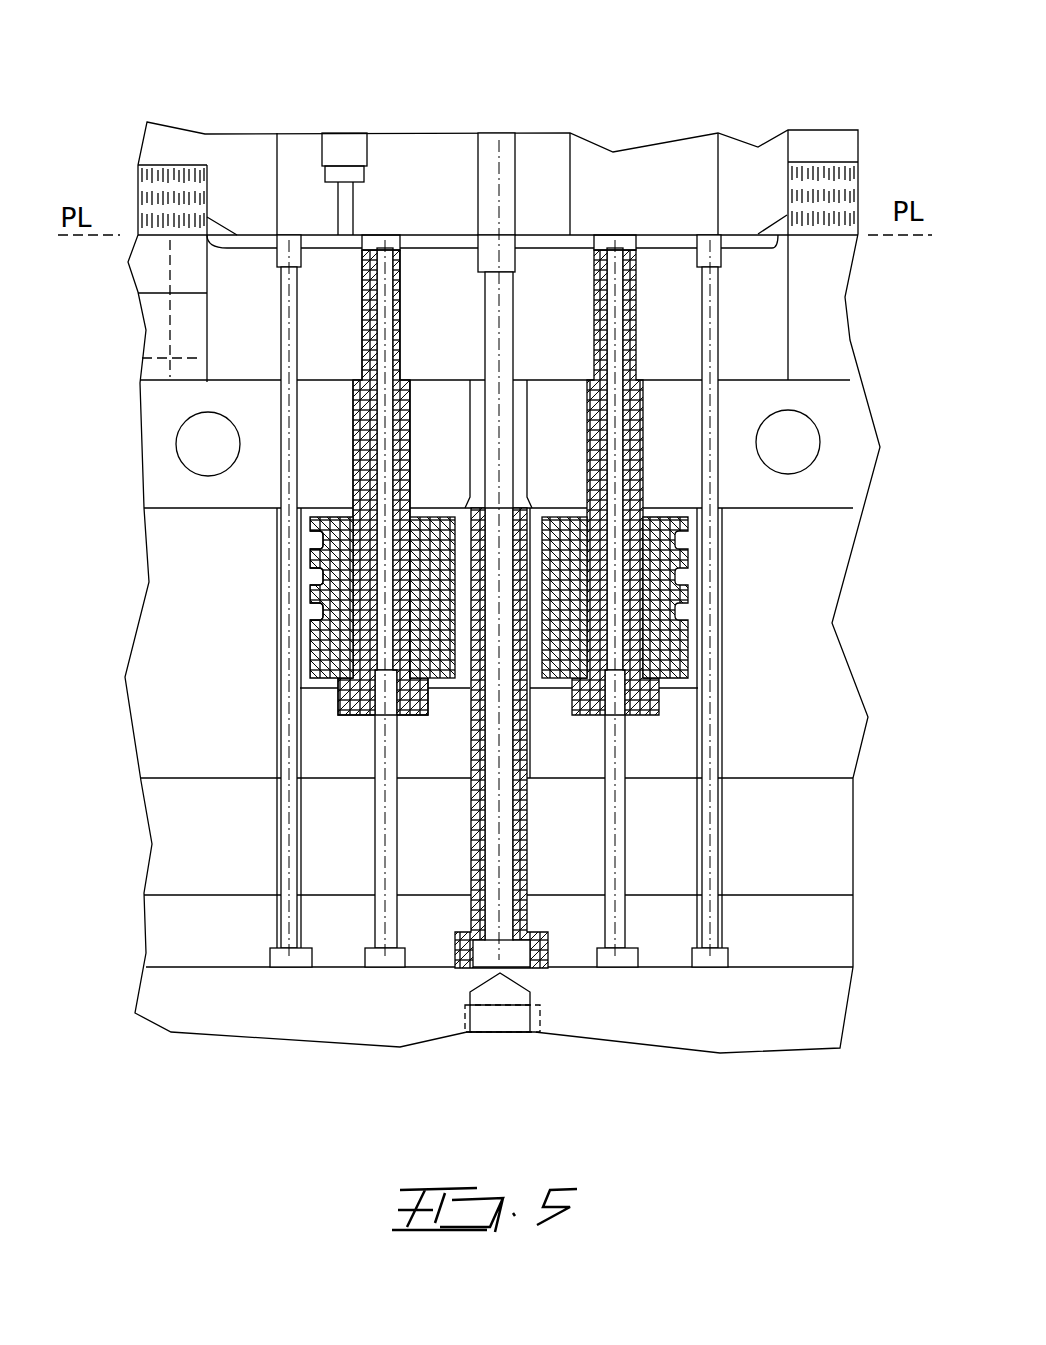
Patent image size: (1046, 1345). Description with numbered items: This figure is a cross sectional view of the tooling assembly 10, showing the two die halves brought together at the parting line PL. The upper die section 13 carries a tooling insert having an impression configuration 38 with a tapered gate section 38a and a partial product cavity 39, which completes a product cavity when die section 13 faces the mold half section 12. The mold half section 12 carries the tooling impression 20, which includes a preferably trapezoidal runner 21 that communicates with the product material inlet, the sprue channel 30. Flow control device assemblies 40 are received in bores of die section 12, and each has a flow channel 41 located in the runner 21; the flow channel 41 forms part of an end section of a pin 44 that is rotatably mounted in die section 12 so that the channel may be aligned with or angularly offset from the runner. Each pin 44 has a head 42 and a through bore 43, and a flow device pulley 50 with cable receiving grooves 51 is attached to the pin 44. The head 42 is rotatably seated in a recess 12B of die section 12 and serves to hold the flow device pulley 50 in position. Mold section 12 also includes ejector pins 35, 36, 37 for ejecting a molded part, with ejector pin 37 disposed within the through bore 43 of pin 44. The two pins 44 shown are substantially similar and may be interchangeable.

The tooling assembly 10 is at (186, 96).
The mold half section 12 is at (124, 262).
The recess 12B is at (428, 708).
The die section 13 is at (134, 205).
The tooling impression 20 is at (133, 165).
The runner 21 is at (250, 243).
The sprue channel 30 is at (505, 147).
The ejector pin 35 is at (490, 960).
The ejector pin 36 is at (285, 802).
The ejector pin 37 is at (380, 870).
The impression configuration 38 is at (207, 182).
The gate section 38a is at (232, 230).
The partial product cavity 39 is at (177, 165).
The flow control device assembly 40 is at (346, 403).
The flow channel 41 is at (390, 237).
The head 42 is at (343, 703).
The through bore 43 is at (393, 713).
The pin 44 is at (356, 488).
The flow device pulley 50 is at (323, 635).
The cable receiving grooves 51 is at (317, 577).